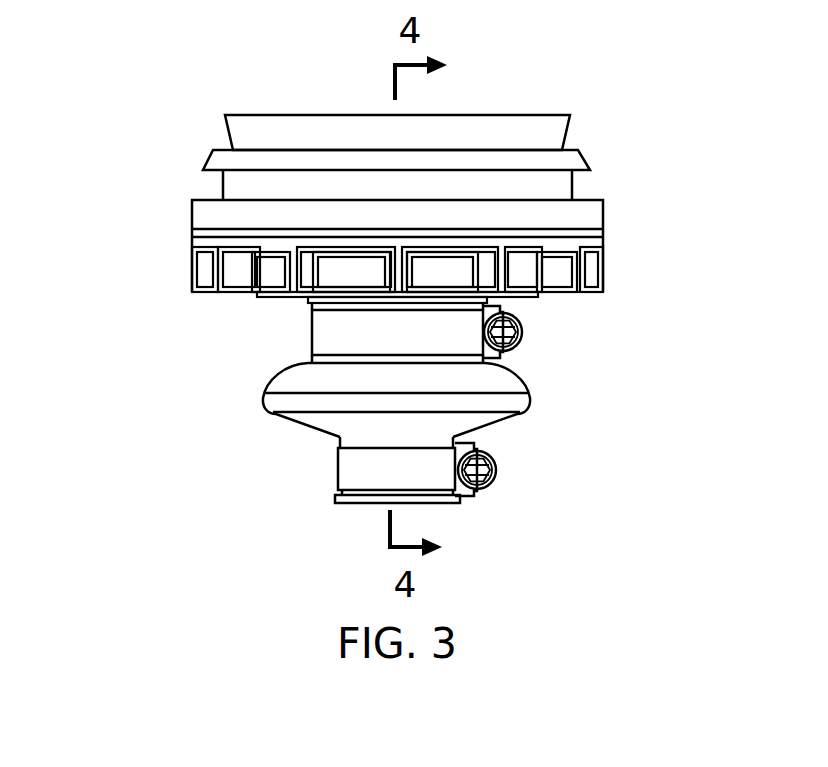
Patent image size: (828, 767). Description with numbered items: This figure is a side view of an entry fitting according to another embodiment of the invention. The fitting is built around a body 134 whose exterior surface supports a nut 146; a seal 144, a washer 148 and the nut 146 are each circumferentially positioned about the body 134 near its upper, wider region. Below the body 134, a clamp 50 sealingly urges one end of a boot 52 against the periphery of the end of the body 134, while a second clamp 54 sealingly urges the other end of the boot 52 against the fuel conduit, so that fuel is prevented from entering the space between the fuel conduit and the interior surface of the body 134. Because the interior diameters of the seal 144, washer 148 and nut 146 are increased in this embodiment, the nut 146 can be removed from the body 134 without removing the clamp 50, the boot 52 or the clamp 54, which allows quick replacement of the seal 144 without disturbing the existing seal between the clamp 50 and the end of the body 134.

The body 134 is at (236, 133).
The seal 144 is at (603, 200).
The washer 148 is at (192, 228).
The nut 146 is at (603, 257).
The clamp 50 is at (524, 330).
The boot 52 is at (533, 402).
The clamp 54 is at (496, 468).